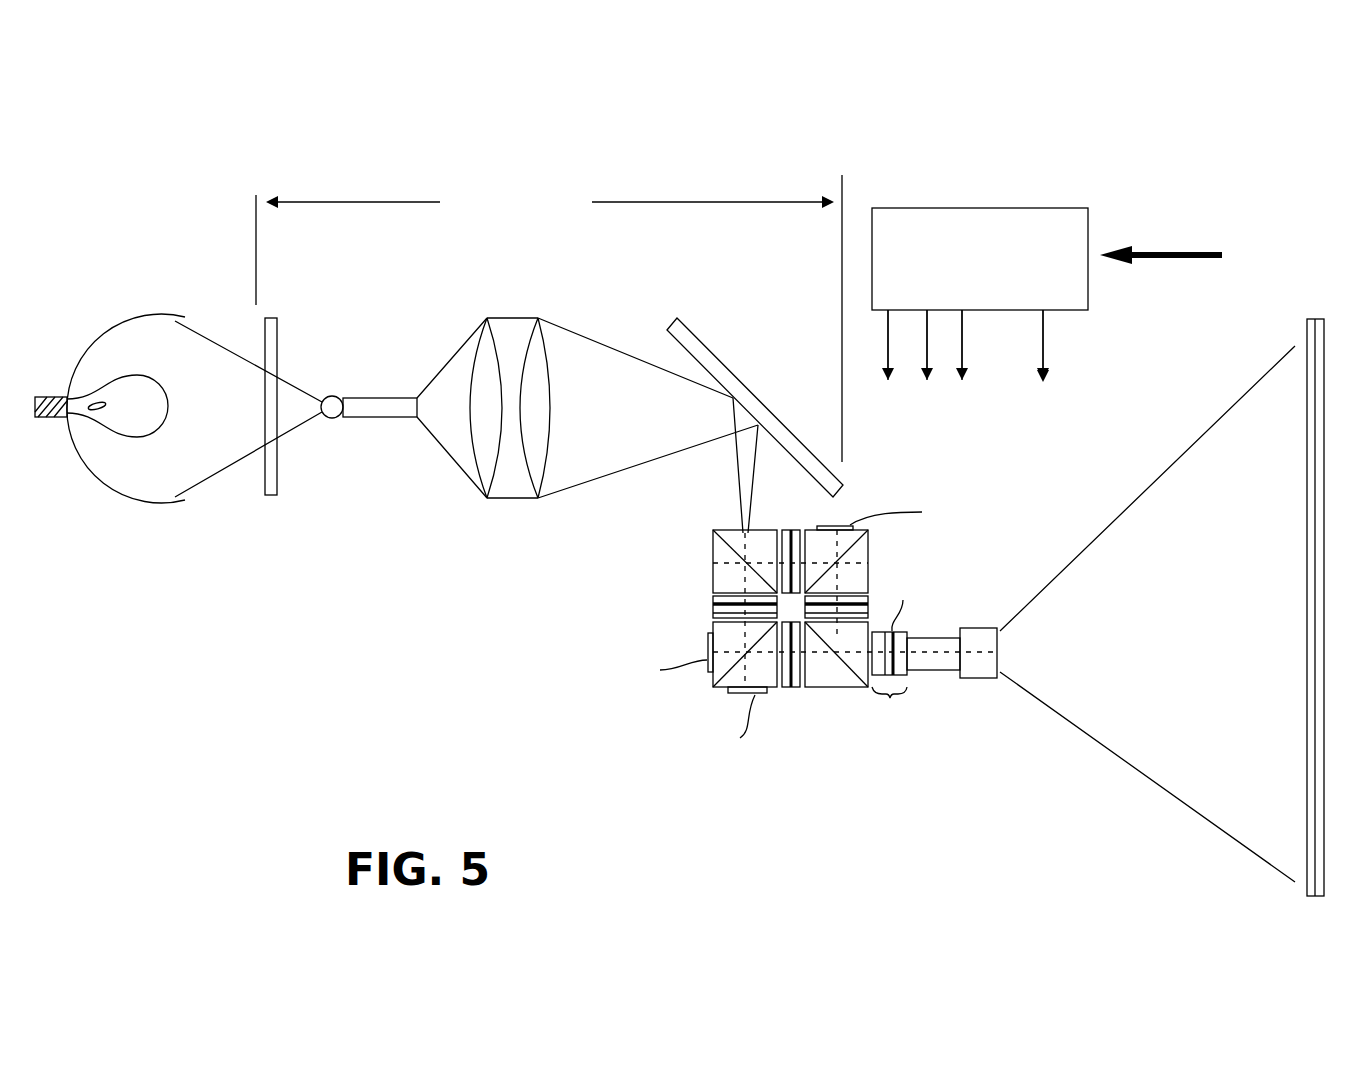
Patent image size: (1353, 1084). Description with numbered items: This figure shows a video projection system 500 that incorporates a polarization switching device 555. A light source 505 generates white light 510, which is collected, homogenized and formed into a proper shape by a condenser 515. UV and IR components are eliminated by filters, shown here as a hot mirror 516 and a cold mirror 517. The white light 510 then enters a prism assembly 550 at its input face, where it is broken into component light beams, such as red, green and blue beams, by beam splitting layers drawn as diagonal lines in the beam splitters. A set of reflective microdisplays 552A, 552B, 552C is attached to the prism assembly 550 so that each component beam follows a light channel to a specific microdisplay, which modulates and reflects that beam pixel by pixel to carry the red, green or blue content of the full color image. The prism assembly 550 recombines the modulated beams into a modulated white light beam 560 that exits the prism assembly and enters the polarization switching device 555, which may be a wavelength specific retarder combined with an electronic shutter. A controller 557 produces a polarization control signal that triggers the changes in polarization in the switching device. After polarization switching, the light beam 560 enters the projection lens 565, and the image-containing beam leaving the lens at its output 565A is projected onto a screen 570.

The video projection system 500 is at (368, 501).
The light source 505 is at (121, 444).
The white light 510 is at (230, 343).
The condenser 515 is at (549, 358).
The hot mirror 516 is at (278, 452).
The cold mirror 517 is at (755, 413).
The prism assembly 550 is at (821, 708).
The reflective microdisplay 552A is at (837, 525).
The reflective microdisplay 552B is at (707, 647).
The reflective microdisplay 552C is at (730, 694).
The polarization switching device 555 is at (890, 700).
The controller 557 is at (1047, 329).
The modulated white light beam 560 is at (925, 641).
The projection lens 565 is at (982, 679).
The projected light 565A is at (999, 653).
The screen 570 is at (1288, 616).